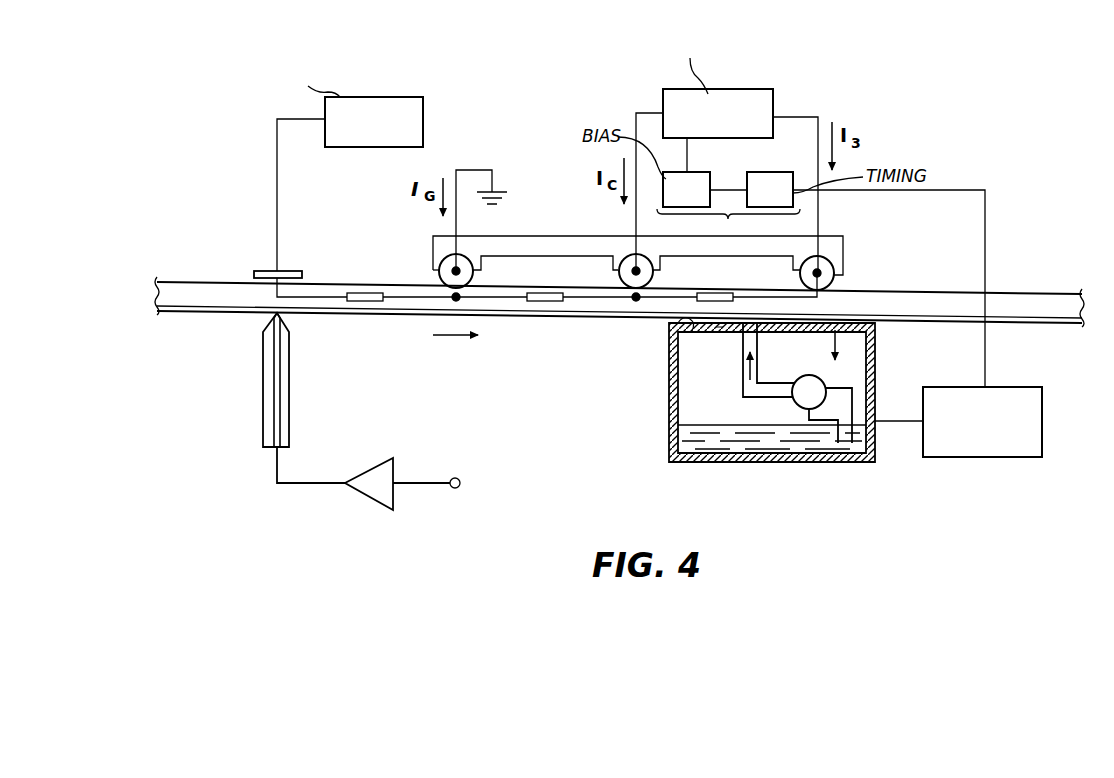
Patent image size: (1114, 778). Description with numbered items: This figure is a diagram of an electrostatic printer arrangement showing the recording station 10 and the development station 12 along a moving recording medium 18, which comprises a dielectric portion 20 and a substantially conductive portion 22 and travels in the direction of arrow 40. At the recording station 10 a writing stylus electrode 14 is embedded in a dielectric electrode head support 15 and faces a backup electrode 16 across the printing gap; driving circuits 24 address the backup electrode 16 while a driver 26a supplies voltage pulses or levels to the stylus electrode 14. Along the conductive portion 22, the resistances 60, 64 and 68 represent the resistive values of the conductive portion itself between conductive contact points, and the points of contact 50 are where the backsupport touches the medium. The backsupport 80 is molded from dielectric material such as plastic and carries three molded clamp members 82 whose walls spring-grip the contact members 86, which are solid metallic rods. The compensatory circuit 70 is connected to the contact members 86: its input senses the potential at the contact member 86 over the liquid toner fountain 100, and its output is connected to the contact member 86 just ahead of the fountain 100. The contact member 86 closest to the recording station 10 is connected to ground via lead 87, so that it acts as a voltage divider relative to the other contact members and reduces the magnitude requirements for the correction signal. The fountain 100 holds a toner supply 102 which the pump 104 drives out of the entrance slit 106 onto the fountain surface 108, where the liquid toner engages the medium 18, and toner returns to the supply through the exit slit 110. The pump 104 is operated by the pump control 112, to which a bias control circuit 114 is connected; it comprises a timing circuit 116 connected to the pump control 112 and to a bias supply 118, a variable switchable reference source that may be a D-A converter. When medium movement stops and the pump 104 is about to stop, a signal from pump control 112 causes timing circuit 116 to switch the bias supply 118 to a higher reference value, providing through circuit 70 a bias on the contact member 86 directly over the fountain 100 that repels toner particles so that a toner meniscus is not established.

The recording station 10 is at (250, 268).
The development station 12 is at (909, 289).
The writing stylus electrode 14 is at (272, 374).
The dielectric electrode head support 15 is at (289, 392).
The backup electrode 16 is at (297, 270).
The recording medium 18 is at (175, 282).
The dielectric portion 20 is at (213, 312).
The conductive portion 22 is at (188, 312).
The driving circuits 24 is at (452, 86).
The driver 26a is at (369, 467).
The arrow 40 is at (458, 341).
The points of contact 50 is at (446, 288).
The resistance 60 is at (373, 306).
The resistance 64 is at (537, 304).
The resistance 68 is at (714, 291).
The compensatory circuit 70 is at (774, 79).
The backsupport 80 is at (562, 232).
The clamp members 82 is at (482, 266).
The contact member 86 is at (433, 254).
The lead 87 is at (484, 171).
The liquid toner fountain 100 is at (666, 384).
The toner supply 102 is at (670, 441).
The pump 104 is at (820, 378).
The entrance slit 106 is at (743, 347).
The fountain surface 108 is at (677, 326).
The exit slit 110 is at (842, 334).
The pump control 112 is at (944, 456).
The bias control circuit 114 is at (728, 226).
The timing circuit 116 is at (750, 173).
The bias supply 118 is at (718, 170).